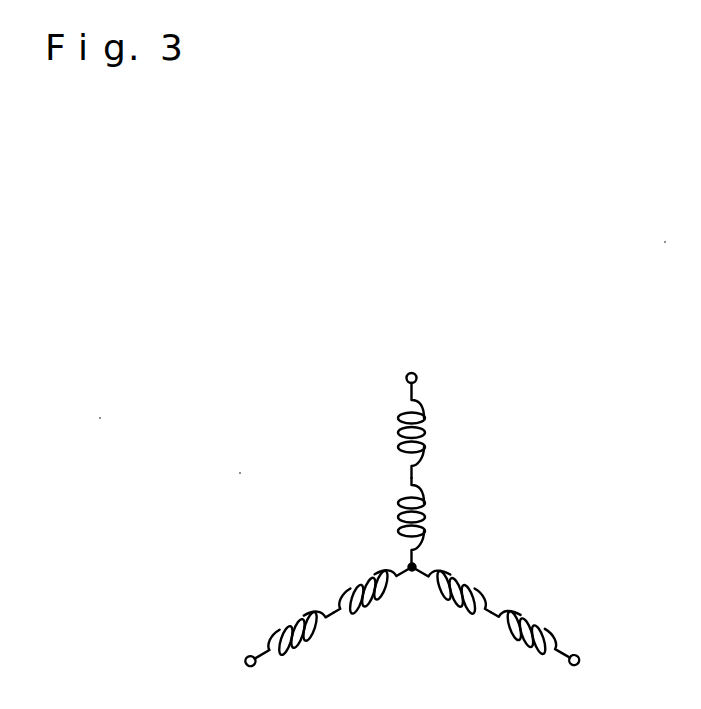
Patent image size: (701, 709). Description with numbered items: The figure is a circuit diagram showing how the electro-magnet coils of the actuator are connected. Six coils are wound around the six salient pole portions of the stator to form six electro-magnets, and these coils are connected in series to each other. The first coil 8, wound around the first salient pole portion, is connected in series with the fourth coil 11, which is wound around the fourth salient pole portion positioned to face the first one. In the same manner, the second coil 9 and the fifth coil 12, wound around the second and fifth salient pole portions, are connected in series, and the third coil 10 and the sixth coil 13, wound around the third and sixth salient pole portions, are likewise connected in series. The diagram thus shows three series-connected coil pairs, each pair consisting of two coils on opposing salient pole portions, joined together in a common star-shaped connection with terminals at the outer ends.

The first coil 8 is at (432, 438).
The second coil 9 is at (528, 618).
The third coil 10 is at (280, 618).
The fourth coil 11 is at (432, 510).
The fifth coil 12 is at (457, 575).
The sixth coil 13 is at (357, 580).